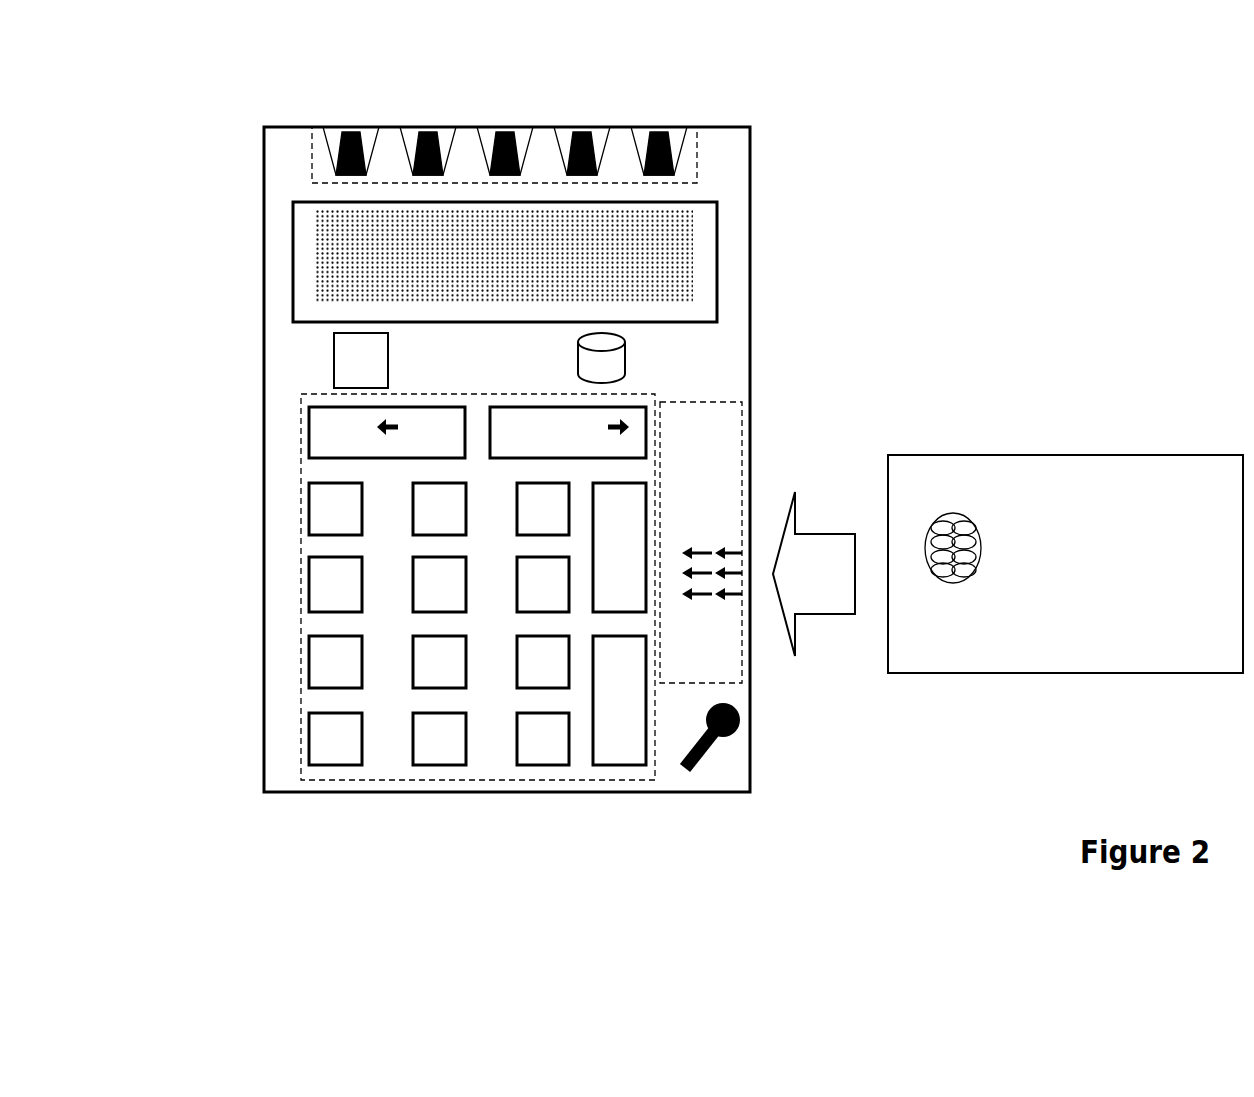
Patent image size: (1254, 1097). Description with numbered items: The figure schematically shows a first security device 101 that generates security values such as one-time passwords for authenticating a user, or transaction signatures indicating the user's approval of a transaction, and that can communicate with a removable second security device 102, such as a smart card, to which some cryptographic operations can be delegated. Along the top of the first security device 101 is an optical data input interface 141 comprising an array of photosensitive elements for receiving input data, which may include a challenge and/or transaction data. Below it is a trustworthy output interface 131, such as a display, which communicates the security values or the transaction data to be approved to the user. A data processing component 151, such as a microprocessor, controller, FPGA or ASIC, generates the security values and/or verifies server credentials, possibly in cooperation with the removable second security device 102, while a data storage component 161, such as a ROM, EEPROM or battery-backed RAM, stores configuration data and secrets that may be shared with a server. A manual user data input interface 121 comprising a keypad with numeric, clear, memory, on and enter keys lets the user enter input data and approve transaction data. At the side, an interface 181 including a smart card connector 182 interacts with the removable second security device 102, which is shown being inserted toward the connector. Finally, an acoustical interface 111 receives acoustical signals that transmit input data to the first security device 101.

The first security device 101 is at (264, 771).
The second security device 102 is at (928, 455).
The acoustical interface 111 is at (743, 710).
The manual user data input interface 121 is at (298, 602).
The trustworthy output interface 131 is at (717, 247).
The optical data input interface 141 is at (700, 147).
The data processing component 151 is at (334, 359).
The data storage component 161 is at (625, 370).
The interface 181 is at (745, 404).
The smart card connector 182 is at (712, 548).